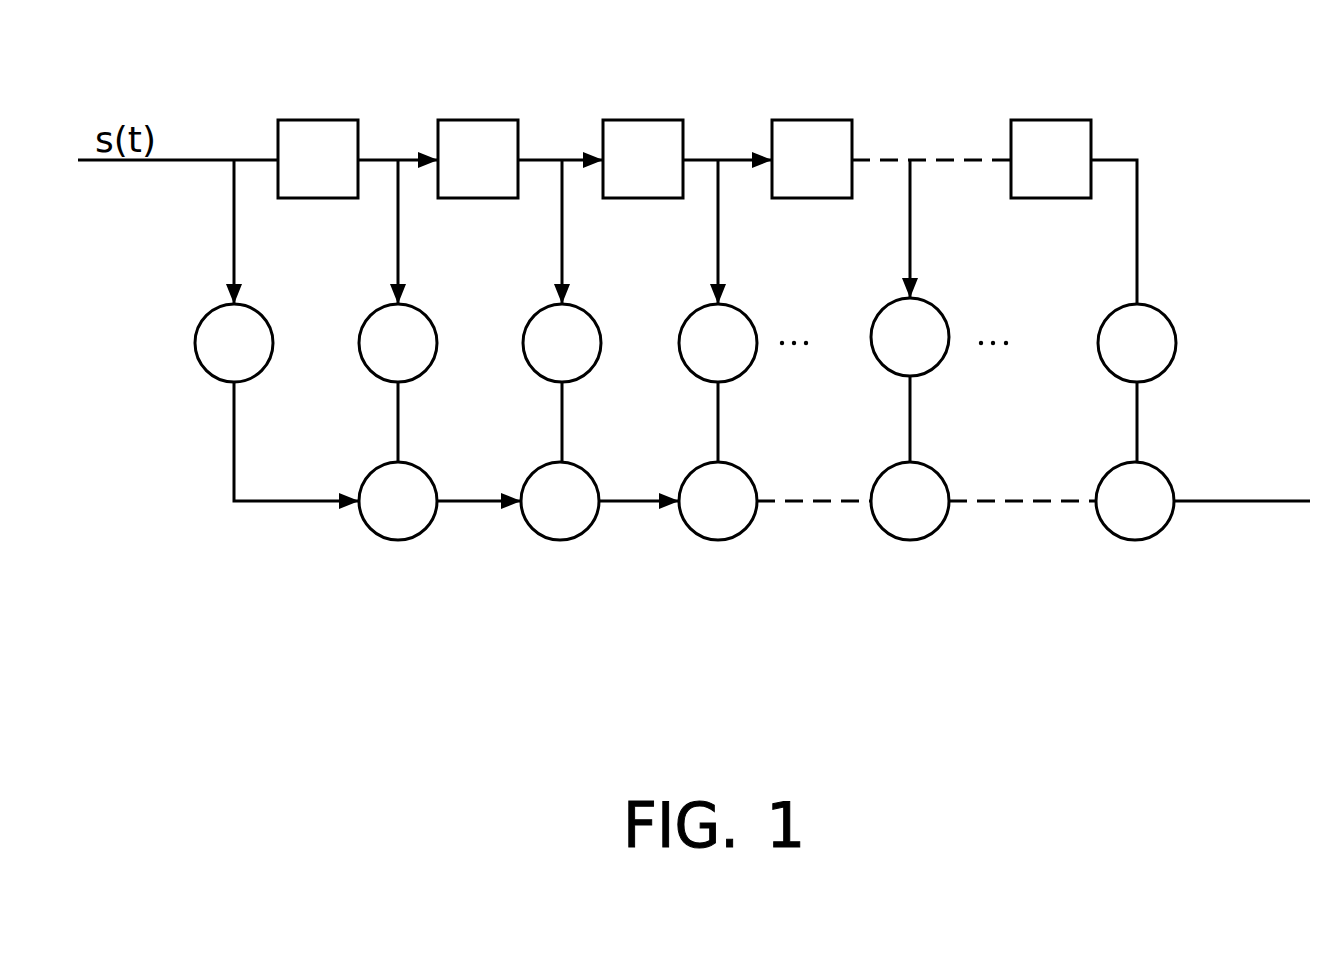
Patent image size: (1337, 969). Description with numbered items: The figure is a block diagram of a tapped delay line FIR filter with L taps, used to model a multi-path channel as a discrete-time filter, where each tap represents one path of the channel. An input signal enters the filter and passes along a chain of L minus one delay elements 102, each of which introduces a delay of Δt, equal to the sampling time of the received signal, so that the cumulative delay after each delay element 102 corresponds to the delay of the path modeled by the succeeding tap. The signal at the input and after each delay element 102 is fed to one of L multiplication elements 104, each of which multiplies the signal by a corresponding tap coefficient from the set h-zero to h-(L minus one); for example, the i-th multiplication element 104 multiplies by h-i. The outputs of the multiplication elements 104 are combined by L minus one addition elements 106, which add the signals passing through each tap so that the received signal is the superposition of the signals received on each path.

The delay element 102 is at (1085, 74).
The multiplication element 104 is at (1103, 365).
The addition element 106 is at (1135, 542).